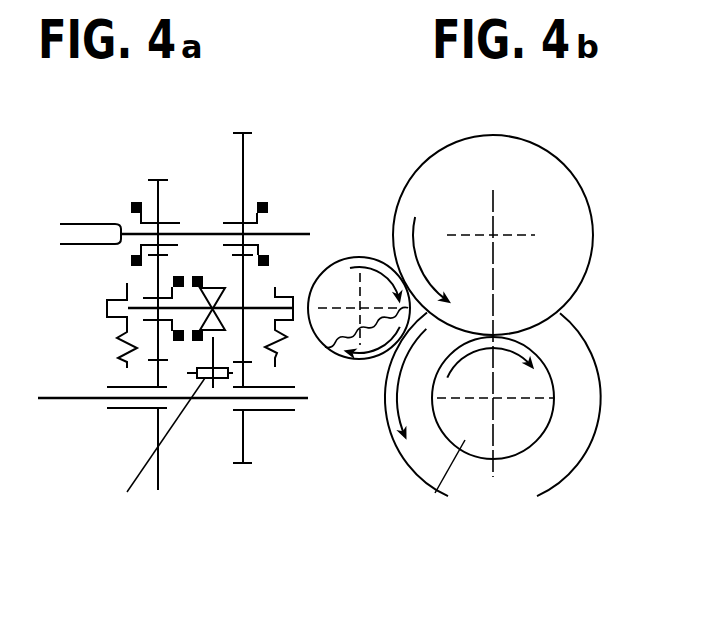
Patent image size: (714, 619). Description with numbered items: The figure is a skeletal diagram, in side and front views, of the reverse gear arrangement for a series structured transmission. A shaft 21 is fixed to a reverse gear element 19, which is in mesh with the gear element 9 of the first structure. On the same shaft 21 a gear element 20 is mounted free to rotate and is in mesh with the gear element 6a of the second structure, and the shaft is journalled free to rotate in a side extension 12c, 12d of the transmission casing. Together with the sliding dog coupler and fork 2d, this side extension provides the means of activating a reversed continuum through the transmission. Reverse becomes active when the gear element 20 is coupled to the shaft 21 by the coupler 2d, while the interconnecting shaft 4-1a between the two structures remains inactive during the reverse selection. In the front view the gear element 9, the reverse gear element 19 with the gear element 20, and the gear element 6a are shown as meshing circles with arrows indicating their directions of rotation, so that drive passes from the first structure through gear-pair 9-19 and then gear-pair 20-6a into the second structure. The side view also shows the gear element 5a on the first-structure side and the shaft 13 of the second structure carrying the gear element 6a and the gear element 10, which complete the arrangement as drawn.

In FIG. 4a, the interconnecting shaft 4-1a is at (83, 222).
In FIG. 4a, the gear element 5a is at (158, 205).
In FIG. 4a, the gear element of the first structure 9 is at (245, 158).
In FIG. 4b, the gear element of the first structure 9 is at (562, 279).
In FIG. 4a, the sliding dog coupler and fork 2d is at (215, 287).
In FIG. 4b, the reverse gear element 19 is at (245, 288).
In FIG. 4a, the gear element 20 is at (155, 270).
In FIG. 4b, the gear element 20 is at (378, 353).
In FIG. 4a, the shaft 21 is at (118, 310).
In FIG. 4a, the side extension of the transmission casing 12d is at (125, 358).
In FIG. 4a, the side extension of the transmission casing 12c is at (280, 360).
In FIG. 4a, the shaft 13 is at (77, 398).
In FIG. 4a, the gear element of the second structure 6a is at (155, 425).
In FIG. 4b, the gear element of the second structure 6a is at (423, 459).
In FIG. 4a, the gear element 10 is at (243, 432).